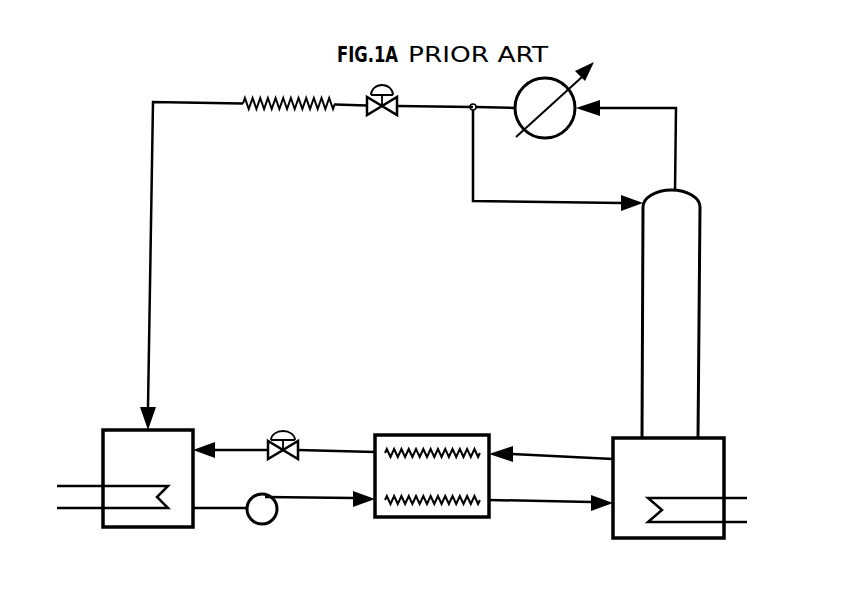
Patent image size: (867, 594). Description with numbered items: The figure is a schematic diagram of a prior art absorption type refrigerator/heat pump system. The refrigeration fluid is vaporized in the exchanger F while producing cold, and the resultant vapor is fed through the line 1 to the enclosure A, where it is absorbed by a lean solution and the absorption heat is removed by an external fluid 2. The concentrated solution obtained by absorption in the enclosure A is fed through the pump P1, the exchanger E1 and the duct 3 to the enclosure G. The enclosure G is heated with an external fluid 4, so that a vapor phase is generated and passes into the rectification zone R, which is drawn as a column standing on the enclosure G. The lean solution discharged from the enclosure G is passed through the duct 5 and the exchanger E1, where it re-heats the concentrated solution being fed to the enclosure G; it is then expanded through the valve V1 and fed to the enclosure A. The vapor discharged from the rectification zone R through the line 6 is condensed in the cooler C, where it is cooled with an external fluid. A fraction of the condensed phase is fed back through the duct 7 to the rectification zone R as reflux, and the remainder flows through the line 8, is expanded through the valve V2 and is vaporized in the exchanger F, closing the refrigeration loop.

The line 1 is at (150, 343).
The external fluid 2 is at (73, 485).
The duct 3 is at (541, 503).
The external fluid 4 is at (743, 497).
The duct 5 is at (545, 455).
The line 6 is at (675, 147).
The duct 7 is at (503, 200).
The line 8 is at (427, 107).
The enclosure A is at (175, 427).
The cooler C is at (567, 132).
The exchanger E1 is at (432, 433).
The exchanger F is at (277, 110).
The enclosure G is at (625, 436).
The pump P1 is at (274, 520).
The rectification zone R is at (640, 317).
The valve V1 is at (283, 430).
The valve V2 is at (382, 117).